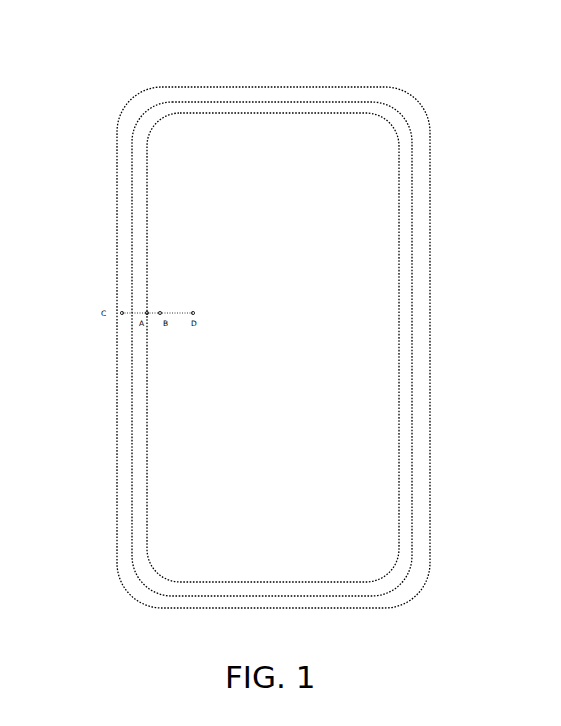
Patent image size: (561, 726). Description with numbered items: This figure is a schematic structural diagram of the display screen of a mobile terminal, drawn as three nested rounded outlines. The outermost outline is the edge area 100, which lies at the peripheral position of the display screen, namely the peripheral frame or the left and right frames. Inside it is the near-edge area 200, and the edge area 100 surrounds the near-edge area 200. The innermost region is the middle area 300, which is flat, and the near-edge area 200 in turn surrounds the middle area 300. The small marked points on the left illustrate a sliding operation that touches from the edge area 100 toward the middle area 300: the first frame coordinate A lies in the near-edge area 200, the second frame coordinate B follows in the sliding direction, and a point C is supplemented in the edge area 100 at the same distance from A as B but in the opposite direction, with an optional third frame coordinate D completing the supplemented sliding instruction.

The edge area 100 is at (125, 393).
The near-edge area 200 is at (140, 217).
The middle area 300 is at (370, 340).